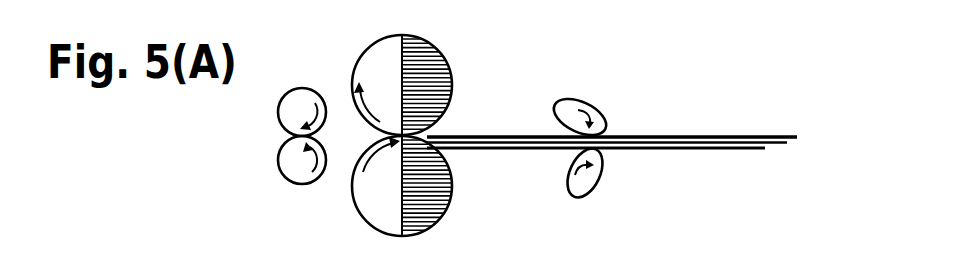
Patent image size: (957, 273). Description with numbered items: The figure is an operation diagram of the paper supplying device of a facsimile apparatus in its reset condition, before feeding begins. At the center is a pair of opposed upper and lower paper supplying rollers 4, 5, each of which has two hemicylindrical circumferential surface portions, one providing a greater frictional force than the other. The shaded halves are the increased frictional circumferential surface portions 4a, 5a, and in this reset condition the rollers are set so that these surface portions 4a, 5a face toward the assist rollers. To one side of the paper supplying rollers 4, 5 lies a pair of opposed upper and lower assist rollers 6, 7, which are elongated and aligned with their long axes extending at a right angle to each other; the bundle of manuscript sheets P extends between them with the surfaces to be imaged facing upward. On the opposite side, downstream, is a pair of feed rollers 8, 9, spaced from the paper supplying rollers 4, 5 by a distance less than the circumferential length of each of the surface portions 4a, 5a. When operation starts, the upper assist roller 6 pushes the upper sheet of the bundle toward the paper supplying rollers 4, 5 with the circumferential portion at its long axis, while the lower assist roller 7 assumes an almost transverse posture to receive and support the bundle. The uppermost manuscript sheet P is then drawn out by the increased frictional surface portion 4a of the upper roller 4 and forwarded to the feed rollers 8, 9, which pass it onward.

The upper paper supplying roller 4 is at (363, 57).
The increased frictional circumferential surface portion 4a is at (436, 62).
The lower paper supplying roller 5 is at (360, 213).
The increased frictional circumferential surface portion 5a is at (442, 190).
The upper assist roller 6 is at (566, 105).
The lower assist roller 7 is at (590, 178).
The upper feed roller 8 is at (290, 102).
The lower feed roller 9 is at (293, 173).
The manuscript sheet P is at (690, 137).